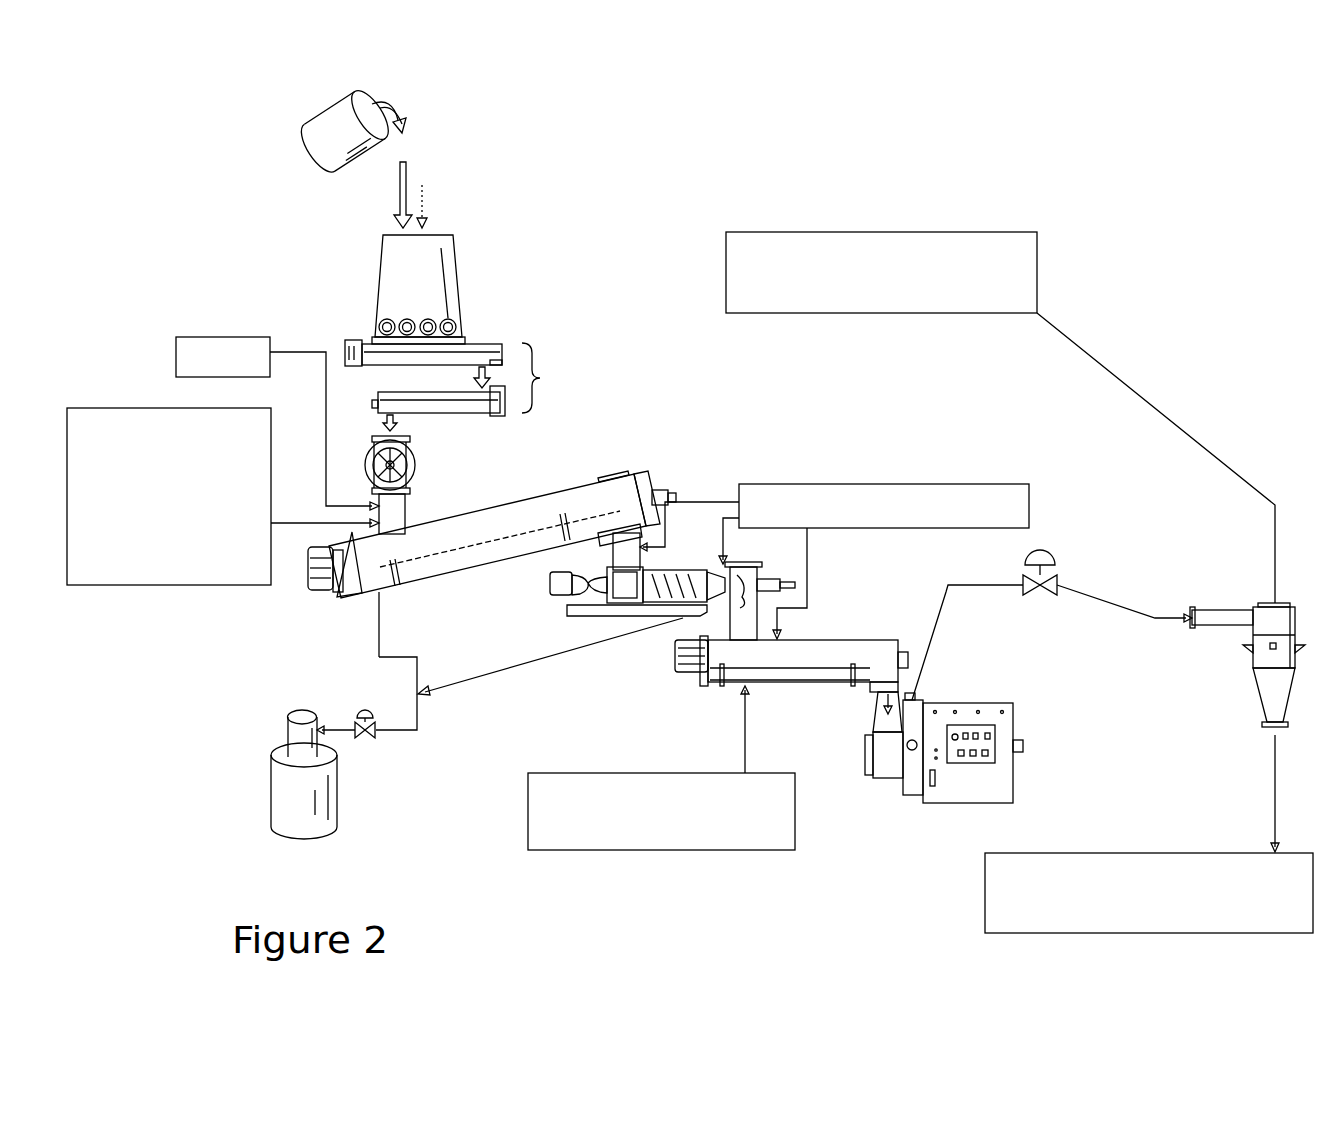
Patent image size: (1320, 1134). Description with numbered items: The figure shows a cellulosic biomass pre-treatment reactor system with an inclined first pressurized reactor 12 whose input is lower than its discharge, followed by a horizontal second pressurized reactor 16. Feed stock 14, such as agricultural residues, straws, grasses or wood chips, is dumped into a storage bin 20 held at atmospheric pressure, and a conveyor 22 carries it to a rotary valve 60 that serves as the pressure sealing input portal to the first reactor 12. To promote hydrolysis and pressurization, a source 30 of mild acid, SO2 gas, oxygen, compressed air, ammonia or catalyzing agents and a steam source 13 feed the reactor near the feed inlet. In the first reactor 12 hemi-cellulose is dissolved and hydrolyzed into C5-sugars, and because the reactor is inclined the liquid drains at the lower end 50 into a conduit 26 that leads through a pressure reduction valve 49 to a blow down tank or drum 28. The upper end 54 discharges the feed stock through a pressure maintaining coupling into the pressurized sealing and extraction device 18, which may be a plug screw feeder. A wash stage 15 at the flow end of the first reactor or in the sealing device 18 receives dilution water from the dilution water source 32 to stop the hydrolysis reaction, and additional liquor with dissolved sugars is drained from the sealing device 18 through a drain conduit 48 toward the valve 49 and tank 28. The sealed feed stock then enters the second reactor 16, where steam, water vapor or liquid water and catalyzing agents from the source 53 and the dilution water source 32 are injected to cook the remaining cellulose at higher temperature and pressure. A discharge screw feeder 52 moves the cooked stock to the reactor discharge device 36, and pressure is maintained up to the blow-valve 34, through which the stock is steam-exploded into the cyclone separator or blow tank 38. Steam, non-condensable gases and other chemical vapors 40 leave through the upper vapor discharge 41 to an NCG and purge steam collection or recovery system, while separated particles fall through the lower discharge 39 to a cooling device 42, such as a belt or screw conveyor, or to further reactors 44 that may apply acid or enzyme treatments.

The first pressurized reactor 12 is at (566, 485).
The steam source 13 is at (212, 337).
The feed stock 14 is at (307, 110).
The wash stage 15 is at (555, 580).
The second pressurized reactor 16 is at (722, 687).
The pressurized sealing and extraction device 18 is at (690, 565).
The storage bin 20 is at (383, 264).
The conveyor 22 is at (457, 385).
The conduit 26 is at (418, 665).
The blow down tank or drum 28 is at (270, 794).
The mild acid, gas, or catalyzing agent source 30 is at (163, 587).
The dilution water source 32 is at (806, 483).
The blow-valve 34 is at (1055, 553).
The reactor discharge device 36 is at (990, 702).
The cyclone separator or blow tank 38 is at (1253, 663).
The lower discharge 39 is at (1275, 795).
The steam, non-condensable gases and chemical vapors 40 is at (806, 232).
The upper vapor discharge 41 is at (1192, 403).
The cooling device 42 is at (1136, 912).
The further reactor 44 is at (1055, 935).
The drain conduit 48 is at (553, 670).
The pressure reduction valve 49 is at (372, 742).
The lower end 50 is at (375, 600).
The discharge device 52 is at (865, 758).
The steam, water or vapour source 53 is at (528, 838).
The upper end 54 is at (640, 475).
The rotary valve 60 is at (415, 465).